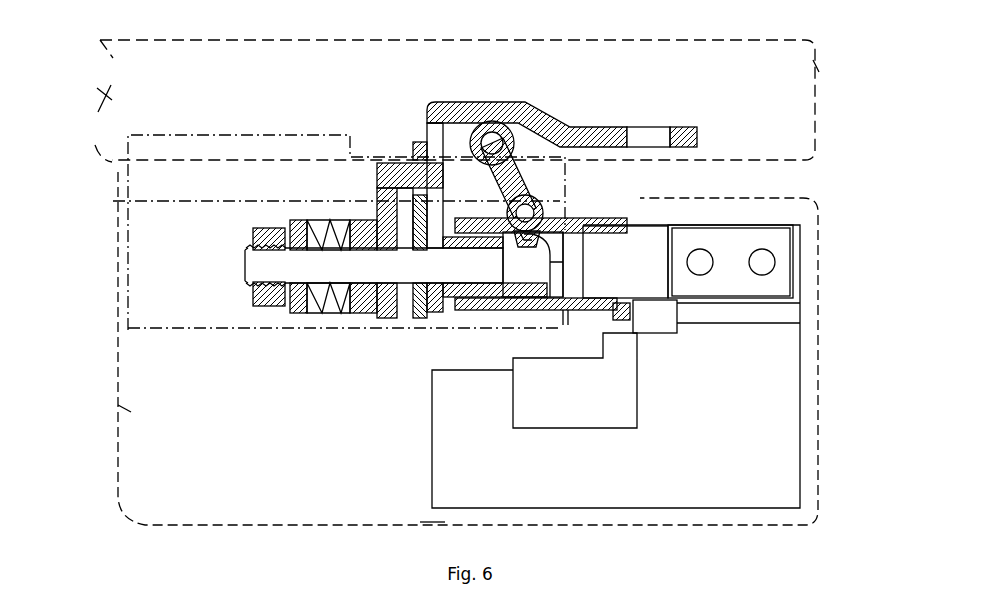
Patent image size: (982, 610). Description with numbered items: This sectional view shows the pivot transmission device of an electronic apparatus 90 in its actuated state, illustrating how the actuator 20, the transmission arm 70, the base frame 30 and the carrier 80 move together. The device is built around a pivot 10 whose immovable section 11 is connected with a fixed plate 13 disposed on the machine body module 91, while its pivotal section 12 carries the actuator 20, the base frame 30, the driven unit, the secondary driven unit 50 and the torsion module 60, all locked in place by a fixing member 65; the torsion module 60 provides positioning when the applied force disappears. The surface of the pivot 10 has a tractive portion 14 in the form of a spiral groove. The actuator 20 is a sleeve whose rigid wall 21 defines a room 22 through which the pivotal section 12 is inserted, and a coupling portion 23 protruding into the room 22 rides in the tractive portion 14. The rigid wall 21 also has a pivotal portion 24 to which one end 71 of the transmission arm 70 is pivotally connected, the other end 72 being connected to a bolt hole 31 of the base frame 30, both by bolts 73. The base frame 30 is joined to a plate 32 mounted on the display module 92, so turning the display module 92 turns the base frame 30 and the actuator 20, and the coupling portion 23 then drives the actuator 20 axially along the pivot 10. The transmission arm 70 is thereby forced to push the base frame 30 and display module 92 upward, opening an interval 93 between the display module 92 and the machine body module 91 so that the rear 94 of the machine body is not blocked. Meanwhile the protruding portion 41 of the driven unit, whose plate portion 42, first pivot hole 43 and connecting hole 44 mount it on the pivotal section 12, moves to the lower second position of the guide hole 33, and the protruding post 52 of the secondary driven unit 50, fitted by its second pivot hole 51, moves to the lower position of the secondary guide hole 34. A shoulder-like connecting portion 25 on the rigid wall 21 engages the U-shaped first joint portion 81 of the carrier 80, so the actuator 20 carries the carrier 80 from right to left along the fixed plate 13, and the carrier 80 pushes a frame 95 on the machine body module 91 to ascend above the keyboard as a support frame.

The pivot 10 is at (654, 338).
The immovable section 11 is at (735, 300).
The pivotal section 12 is at (396, 296).
The fixed plate 13 is at (790, 404).
The tractive portion 14 is at (556, 268).
The actuator 20 is at (566, 323).
The rigid wall 21 is at (526, 312).
The room 22 is at (568, 312).
The coupling portion 23 is at (552, 240).
The pivotal portion 24 is at (548, 213).
The connecting portion 25 is at (634, 316).
The base frame 30 is at (561, 174).
The bolt hole 31 is at (492, 132).
The plate 32 is at (605, 127).
The guide hole 33 is at (437, 248).
The secondary guide hole 34 is at (435, 102).
The protruding portion 41 is at (488, 298).
The plate portion 42 is at (422, 320).
The first pivot hole 43 is at (418, 318).
The connecting hole 44 is at (420, 142).
The secondary driven unit 50 is at (378, 235).
The second pivot hole 51 is at (388, 318).
The protruding post 52 is at (400, 165).
The torsion module 60 is at (322, 322).
The fixing member 65 is at (272, 308).
The transmission arm 70 is at (534, 168).
The end 71 is at (540, 190).
The end 72 is at (518, 112).
The bolt 73 is at (482, 128).
The carrier 80 is at (575, 428).
The first joint portion 81 is at (620, 322).
The electronic apparatus 90 is at (846, 130).
The machine body module 91 is at (110, 412).
The display module 92 is at (822, 76).
The interval 93 is at (118, 183).
The rear 94 is at (185, 205).
The frame 95 is at (420, 520).